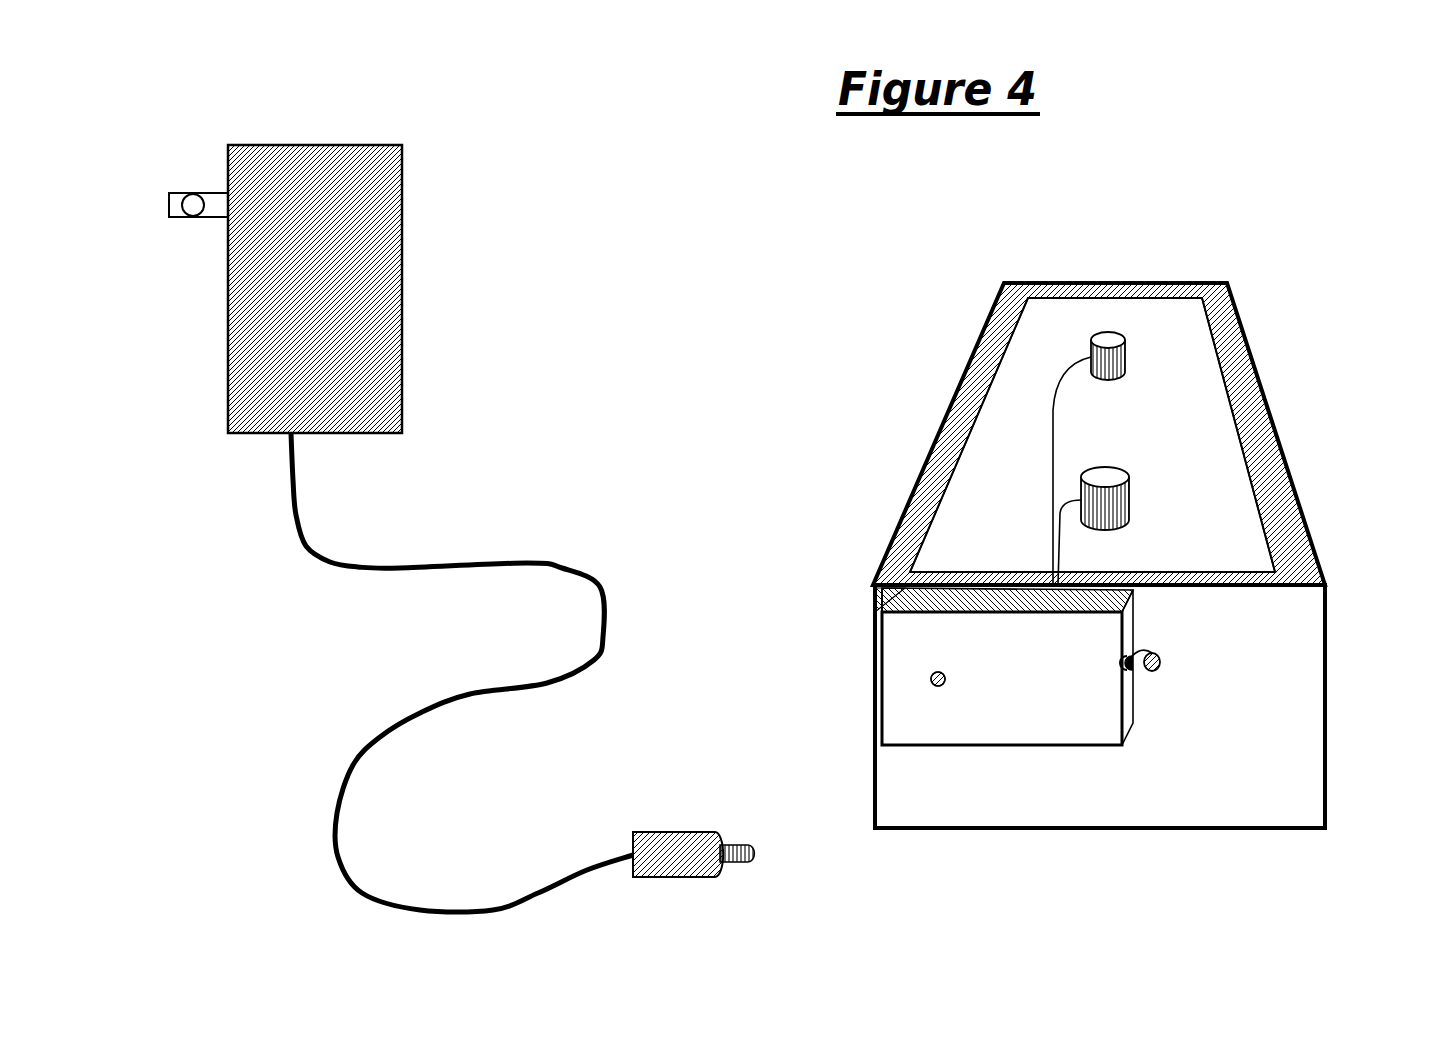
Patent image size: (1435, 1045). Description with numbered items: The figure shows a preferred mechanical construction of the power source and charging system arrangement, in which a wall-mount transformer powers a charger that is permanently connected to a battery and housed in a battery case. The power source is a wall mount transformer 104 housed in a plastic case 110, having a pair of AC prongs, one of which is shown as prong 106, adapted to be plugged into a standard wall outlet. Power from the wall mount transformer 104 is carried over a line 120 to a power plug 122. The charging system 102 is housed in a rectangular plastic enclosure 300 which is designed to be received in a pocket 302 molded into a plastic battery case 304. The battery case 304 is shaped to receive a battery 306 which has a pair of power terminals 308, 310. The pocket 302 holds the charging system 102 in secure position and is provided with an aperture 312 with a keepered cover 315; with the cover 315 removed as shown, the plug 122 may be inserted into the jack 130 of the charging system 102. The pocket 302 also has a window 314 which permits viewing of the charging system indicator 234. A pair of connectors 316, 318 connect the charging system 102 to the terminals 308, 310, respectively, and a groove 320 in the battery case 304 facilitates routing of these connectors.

The charging system 102 is at (882, 583).
The wall mount transformer 104 is at (410, 130).
The AC prong 106 is at (169, 216).
The plastic case 110 is at (402, 186).
The line 120 is at (606, 605).
The power plug 122 is at (743, 825).
The jack 130 is at (1137, 667).
The indicator 234 is at (931, 681).
The rectangular plastic enclosure 300 is at (907, 597).
The pocket 302 is at (897, 748).
The battery case 304 is at (1325, 706).
The battery 306 is at (1232, 422).
The power terminal 308 is at (1122, 347).
The power terminal 310 is at (1128, 490).
The aperture 312 is at (1137, 668).
The window 314 is at (932, 685).
The keepered cover 315 is at (1157, 654).
The connector 316 is at (1053, 398).
The connector 318 is at (1060, 505).
The groove 320 is at (1073, 585).